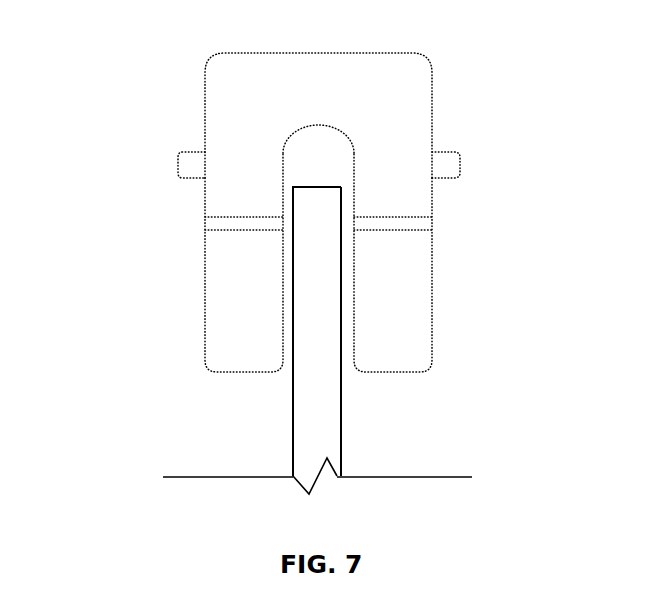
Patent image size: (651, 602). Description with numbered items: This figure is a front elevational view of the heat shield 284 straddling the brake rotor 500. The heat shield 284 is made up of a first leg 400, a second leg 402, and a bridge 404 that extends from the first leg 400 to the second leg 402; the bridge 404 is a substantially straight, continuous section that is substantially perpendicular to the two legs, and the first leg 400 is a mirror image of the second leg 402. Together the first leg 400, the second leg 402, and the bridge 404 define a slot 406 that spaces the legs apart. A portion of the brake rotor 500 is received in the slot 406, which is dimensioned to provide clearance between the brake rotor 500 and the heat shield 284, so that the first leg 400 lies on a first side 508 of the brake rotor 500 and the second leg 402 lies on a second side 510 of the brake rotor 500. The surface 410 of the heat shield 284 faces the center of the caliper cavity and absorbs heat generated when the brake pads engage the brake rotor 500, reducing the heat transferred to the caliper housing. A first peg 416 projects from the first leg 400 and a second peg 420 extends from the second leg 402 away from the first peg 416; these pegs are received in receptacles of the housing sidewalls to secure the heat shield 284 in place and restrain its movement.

The heat shield 284 is at (367, 112).
The first leg 400 is at (393, 270).
The second leg 402 is at (233, 274).
The bridge 404 is at (337, 99).
The slot 406 is at (281, 380).
The surface 410 is at (318, 115).
The first peg 416 is at (445, 167).
The second peg 420 is at (192, 168).
The brake rotor 500 is at (450, 340).
The first side 508 is at (342, 406).
The second side 510 is at (293, 450).